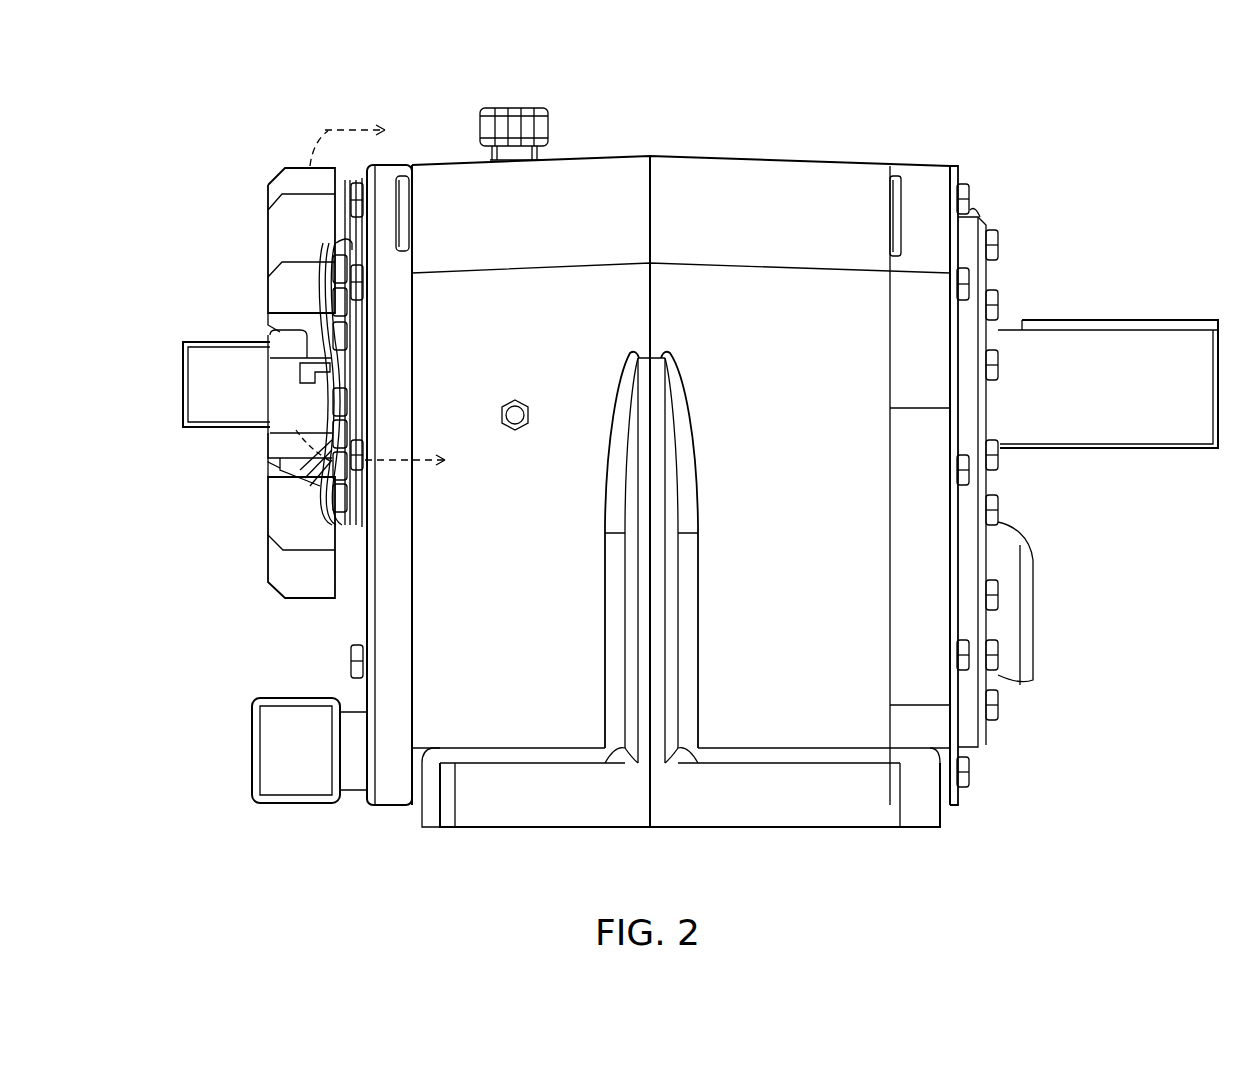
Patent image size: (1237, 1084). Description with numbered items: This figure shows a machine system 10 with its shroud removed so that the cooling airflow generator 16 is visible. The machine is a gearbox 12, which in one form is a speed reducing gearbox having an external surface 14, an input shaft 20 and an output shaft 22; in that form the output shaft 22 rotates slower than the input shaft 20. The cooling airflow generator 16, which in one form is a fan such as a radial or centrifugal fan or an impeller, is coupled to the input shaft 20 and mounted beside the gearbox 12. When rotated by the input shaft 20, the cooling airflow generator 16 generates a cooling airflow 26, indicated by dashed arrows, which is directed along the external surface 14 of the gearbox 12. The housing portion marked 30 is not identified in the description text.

The machine system 10 is at (1106, 92).
The gearbox 12 is at (958, 168).
The external surface 14 is at (440, 165).
The cooling airflow generator 16 is at (268, 233).
The input shaft 20 is at (224, 412).
The output shaft 22 is at (1145, 335).
The cooling airflow 26 is at (325, 130).
The housing 30 is at (780, 112).